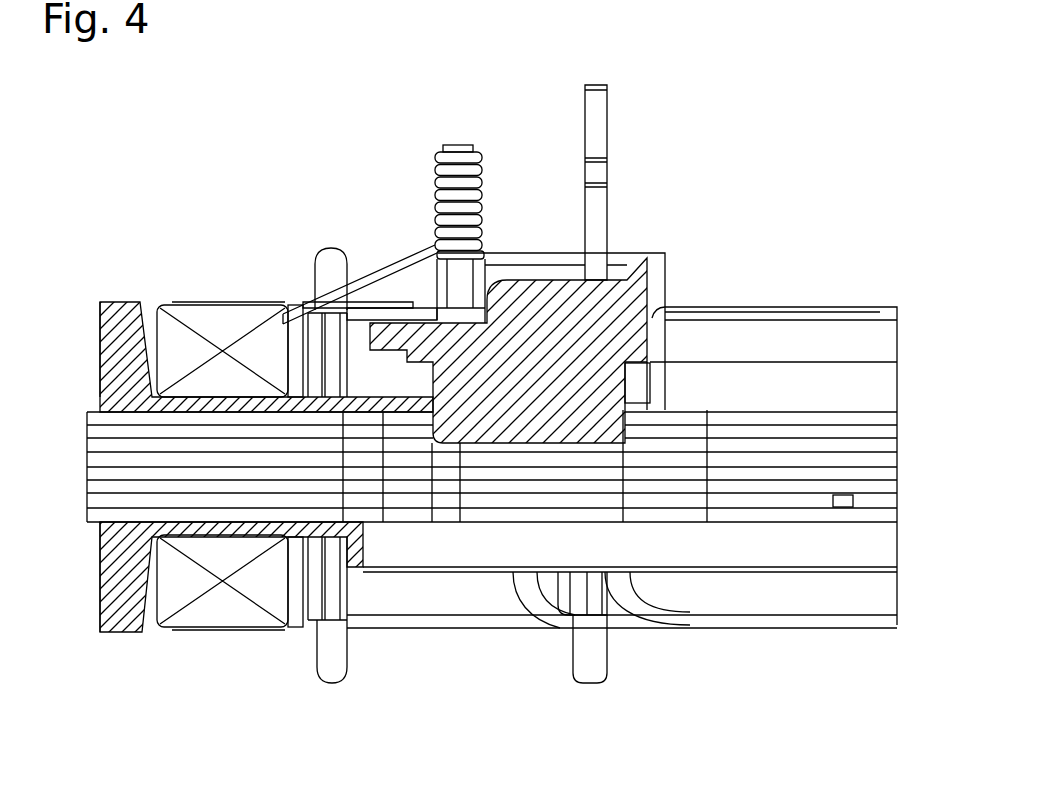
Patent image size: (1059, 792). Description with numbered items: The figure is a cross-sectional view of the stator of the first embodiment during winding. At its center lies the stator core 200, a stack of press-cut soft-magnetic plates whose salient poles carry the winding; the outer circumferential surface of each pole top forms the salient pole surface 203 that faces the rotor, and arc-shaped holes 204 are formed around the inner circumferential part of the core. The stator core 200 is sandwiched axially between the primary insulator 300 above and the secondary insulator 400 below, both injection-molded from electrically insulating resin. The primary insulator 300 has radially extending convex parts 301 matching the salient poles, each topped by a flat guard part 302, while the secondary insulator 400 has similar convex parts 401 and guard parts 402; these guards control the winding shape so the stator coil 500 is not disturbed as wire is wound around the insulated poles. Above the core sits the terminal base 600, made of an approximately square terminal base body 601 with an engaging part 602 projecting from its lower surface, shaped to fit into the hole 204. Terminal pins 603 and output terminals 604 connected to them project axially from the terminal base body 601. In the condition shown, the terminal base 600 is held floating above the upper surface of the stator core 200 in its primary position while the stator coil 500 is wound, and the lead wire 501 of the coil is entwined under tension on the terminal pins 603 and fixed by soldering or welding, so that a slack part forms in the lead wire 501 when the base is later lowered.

The stator core 200 is at (800, 410).
The salient pole surface 203 is at (85, 458).
The hole 204 is at (497, 498).
The primary insulator 300 is at (115, 290).
The convex part 301 is at (253, 397).
The guard part 302 is at (100, 363).
The secondary insulator 400 is at (125, 645).
The convex part 401 is at (273, 617).
The guard part 402 is at (100, 588).
The stator coil 500 is at (212, 322).
The lead wire 501 is at (380, 265).
The terminal base 600 is at (520, 240).
The terminal base body 601 is at (652, 278).
The engaging part 602 is at (628, 388).
The terminal pin 603 is at (457, 142).
The output terminal 604 is at (598, 128).